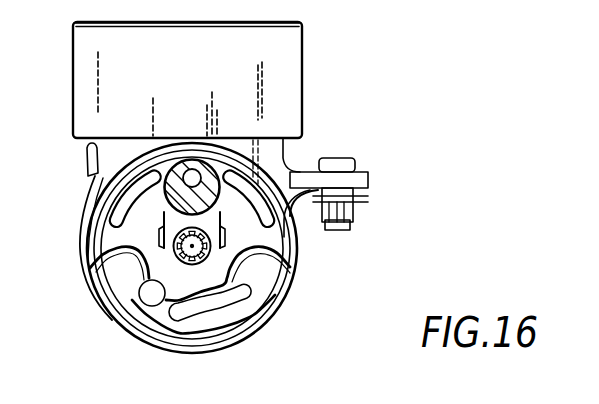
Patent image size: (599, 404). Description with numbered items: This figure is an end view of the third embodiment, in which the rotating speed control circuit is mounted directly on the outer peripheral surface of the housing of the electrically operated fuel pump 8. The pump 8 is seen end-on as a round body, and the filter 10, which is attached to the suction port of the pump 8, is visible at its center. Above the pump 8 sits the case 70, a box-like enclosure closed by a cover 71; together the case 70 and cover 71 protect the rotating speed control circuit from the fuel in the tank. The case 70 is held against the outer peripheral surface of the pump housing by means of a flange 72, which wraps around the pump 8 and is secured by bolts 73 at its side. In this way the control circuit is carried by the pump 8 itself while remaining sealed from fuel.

The electrically operated fuel pump 8 is at (300, 266).
The filter 10 is at (167, 200).
The case 70 is at (302, 80).
The cover 71 is at (292, 22).
The flange 72 is at (272, 157).
The bolts 73 is at (352, 162).